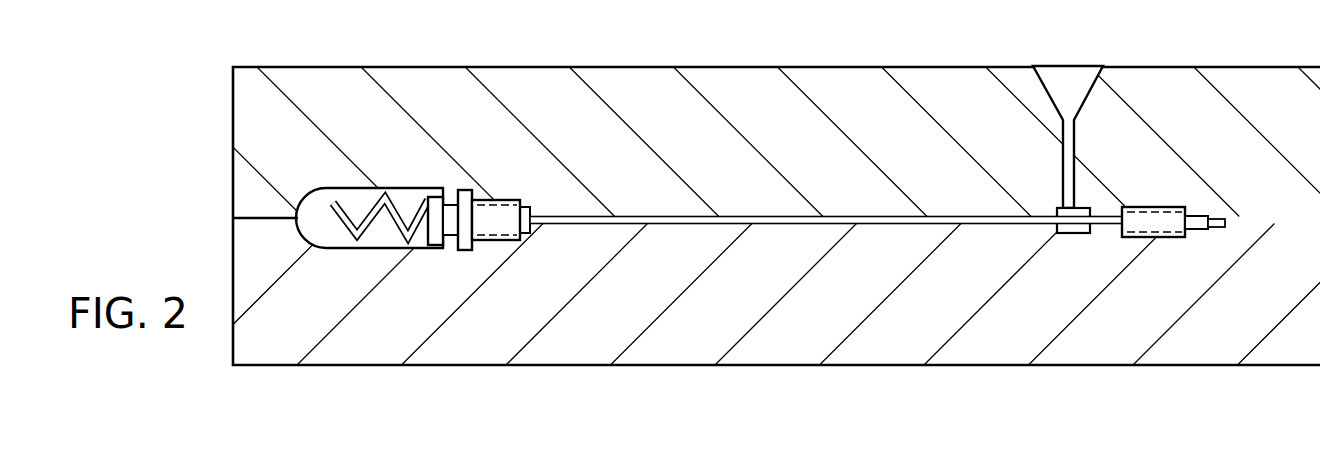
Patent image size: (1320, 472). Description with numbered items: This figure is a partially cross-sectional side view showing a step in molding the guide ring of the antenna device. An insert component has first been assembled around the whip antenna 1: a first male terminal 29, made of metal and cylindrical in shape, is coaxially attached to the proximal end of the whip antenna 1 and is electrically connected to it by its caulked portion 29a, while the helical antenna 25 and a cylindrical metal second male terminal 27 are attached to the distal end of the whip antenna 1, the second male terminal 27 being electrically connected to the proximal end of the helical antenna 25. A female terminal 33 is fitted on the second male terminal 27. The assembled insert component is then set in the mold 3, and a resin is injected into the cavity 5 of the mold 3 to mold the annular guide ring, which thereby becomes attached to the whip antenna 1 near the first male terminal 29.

The whip antenna 1 is at (722, 216).
The mold 3 is at (250, 194).
The cavity 5 is at (1074, 236).
The helical antenna 25 is at (397, 204).
The second male terminal 27 is at (522, 246).
The first male terminal 29 is at (1153, 237).
The caulked portion 29a is at (1200, 230).
The female terminal 33 is at (490, 212).